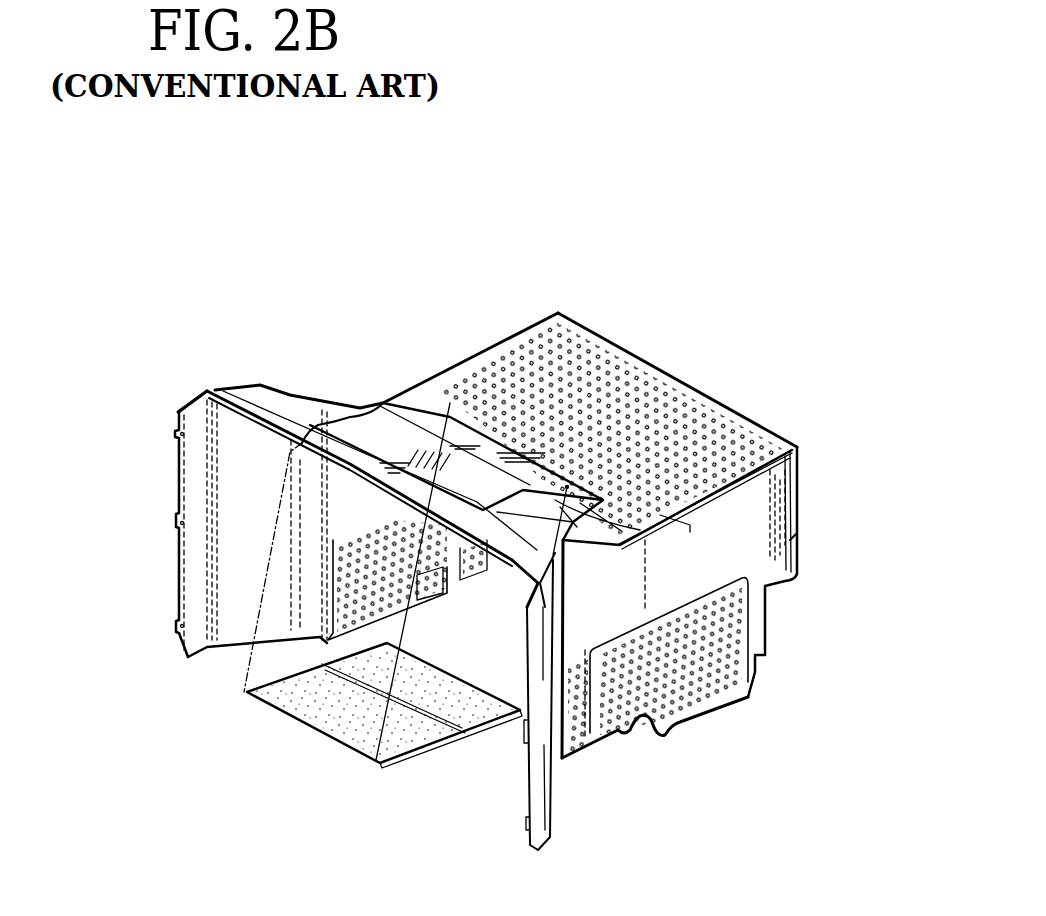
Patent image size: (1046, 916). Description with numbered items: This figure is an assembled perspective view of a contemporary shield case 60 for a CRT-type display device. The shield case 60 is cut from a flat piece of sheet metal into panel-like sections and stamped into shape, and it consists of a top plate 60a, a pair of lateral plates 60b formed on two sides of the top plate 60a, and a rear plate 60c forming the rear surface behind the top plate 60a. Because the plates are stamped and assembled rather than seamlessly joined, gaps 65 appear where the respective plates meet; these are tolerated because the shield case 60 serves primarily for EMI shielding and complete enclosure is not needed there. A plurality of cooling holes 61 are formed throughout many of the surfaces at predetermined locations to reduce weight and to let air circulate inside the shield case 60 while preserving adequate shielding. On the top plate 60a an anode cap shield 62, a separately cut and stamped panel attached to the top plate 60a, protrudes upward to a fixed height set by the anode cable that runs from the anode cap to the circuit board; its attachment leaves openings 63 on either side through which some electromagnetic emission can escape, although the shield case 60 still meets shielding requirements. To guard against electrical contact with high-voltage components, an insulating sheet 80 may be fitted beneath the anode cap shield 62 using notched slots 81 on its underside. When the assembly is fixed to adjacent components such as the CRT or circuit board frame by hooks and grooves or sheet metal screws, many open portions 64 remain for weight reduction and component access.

The shield case 60 is at (215, 385).
The top plate 60a is at (330, 417).
The lateral plates 60b is at (213, 500).
The rear plate 60c is at (800, 497).
The cooling holes 61 is at (582, 390).
The anode cap shield 62 is at (470, 440).
The openings 63 is at (607, 527).
The open portions 64 is at (650, 722).
The gaps 65 is at (528, 600).
The insulating sheet 80 is at (320, 723).
The notched slots 81 is at (450, 403).